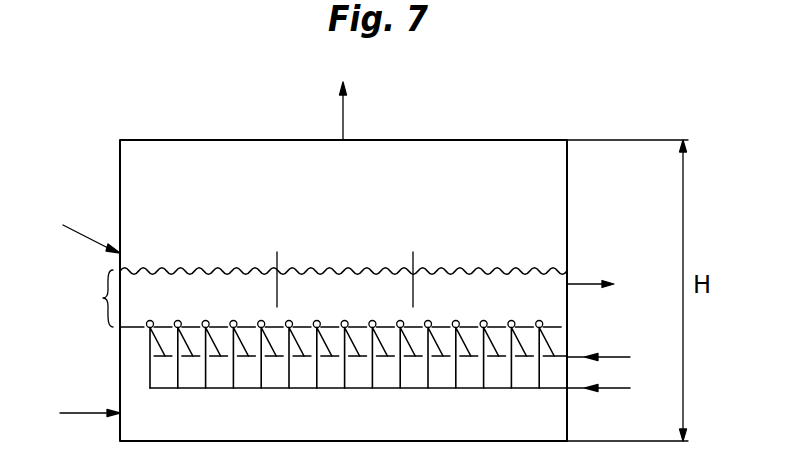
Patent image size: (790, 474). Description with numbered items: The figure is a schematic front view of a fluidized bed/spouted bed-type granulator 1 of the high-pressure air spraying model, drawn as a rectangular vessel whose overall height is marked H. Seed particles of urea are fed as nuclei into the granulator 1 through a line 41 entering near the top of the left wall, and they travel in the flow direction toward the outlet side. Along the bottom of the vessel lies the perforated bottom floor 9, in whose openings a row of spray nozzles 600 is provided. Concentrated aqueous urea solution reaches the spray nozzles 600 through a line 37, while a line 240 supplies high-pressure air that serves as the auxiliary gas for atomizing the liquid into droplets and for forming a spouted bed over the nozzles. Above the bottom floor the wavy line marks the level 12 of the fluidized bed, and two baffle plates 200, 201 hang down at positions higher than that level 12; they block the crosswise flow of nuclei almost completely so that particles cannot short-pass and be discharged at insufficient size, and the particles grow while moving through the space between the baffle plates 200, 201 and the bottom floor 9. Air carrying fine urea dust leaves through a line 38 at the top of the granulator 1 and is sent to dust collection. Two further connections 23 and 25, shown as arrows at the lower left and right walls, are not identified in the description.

The granulator 1 is at (567, 182).
The bottom floor 9 is at (141, 331).
The level (fluidized bed) 12 is at (100, 298).
The lower inlet 23 is at (90, 417).
The liquid outlet 25 is at (583, 283).
The line 37 is at (605, 390).
The line 38 is at (347, 113).
The line 41 is at (86, 240).
The baffle plate 200 is at (276, 258).
The baffle plate 201 is at (413, 258).
The line 240 is at (601, 356).
The spray nozzles 600 is at (262, 321).